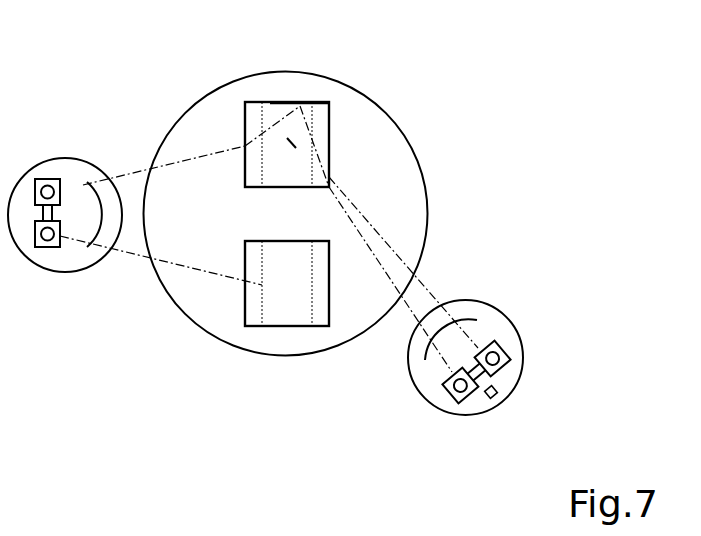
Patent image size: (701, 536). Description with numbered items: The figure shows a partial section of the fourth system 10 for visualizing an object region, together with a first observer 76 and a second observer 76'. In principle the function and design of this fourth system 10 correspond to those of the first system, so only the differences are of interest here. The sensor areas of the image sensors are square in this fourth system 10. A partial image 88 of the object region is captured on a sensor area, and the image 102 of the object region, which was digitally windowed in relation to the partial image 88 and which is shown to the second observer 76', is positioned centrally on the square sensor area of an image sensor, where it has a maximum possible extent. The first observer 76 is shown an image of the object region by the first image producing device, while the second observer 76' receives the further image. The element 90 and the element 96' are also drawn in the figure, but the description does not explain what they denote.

The fourth system for visualizing an object region 10 is at (156, 366).
The first observer 76 is at (65, 186).
The second observer 76' is at (437, 372).
The partial image 88 is at (244, 108).
The second prism element 90 is at (255, 328).
The image of the object region 102 is at (297, 108).
The light source 96' is at (516, 422).